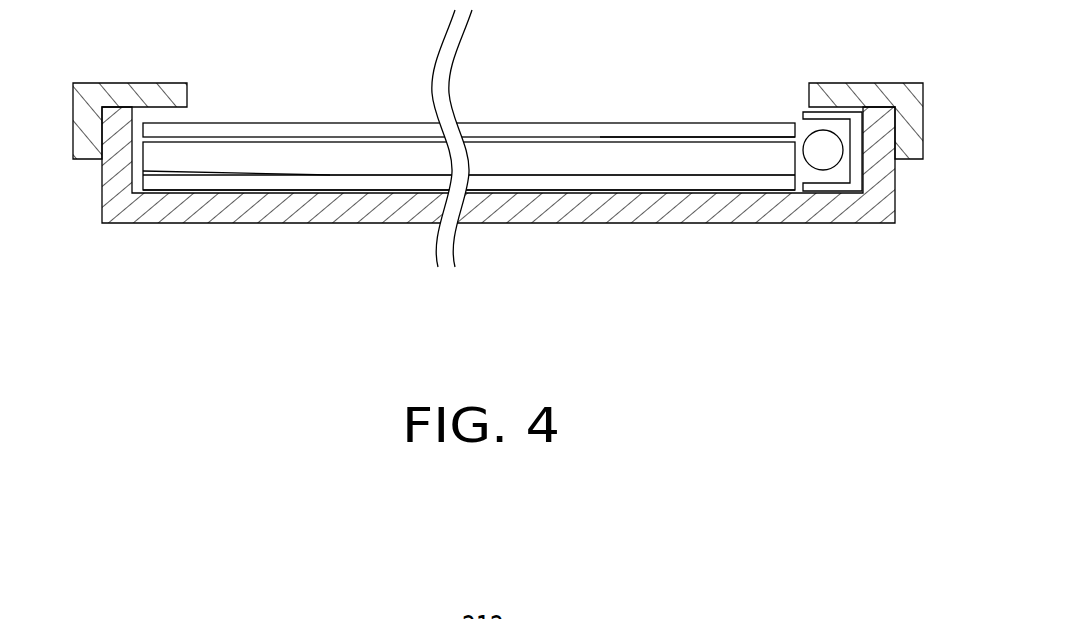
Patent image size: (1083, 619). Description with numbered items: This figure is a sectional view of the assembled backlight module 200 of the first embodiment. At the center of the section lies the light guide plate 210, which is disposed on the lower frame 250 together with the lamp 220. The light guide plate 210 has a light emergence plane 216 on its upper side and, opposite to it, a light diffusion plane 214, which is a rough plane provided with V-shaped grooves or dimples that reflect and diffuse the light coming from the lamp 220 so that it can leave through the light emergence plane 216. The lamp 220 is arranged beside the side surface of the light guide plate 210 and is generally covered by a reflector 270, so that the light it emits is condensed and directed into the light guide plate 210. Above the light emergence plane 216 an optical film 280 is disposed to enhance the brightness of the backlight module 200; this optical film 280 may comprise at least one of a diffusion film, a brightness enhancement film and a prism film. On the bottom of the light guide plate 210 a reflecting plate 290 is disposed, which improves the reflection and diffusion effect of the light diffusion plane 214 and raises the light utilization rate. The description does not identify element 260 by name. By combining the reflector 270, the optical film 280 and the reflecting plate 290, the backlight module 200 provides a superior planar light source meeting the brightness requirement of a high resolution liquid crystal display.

The backlight module 200 is at (524, 198).
The light guide plate 210 is at (626, 150).
The light diffusion plane 214 is at (577, 173).
The light emergence plane 216 is at (683, 137).
The lamp 220 is at (822, 142).
The lower frame 250 is at (898, 93).
The back frame 260 is at (860, 213).
The reflector 270 is at (843, 115).
The optical film 280 is at (748, 133).
The reflecting plate 290 is at (697, 183).